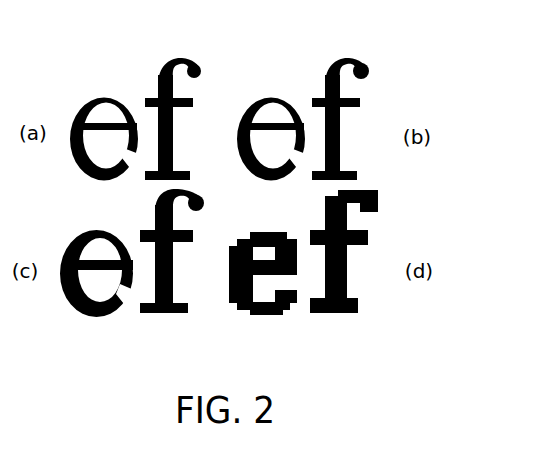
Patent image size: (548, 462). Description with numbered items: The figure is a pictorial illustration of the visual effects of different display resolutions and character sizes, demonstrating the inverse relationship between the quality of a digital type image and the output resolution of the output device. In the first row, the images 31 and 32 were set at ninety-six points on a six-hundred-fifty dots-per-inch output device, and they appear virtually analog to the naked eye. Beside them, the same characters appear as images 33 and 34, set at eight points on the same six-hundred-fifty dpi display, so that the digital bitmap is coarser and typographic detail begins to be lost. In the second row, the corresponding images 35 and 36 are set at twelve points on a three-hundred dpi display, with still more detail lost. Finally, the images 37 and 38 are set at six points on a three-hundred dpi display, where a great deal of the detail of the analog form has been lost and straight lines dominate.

The image 31 is at (96, 97).
The image 32 is at (180, 60).
The character image 33 is at (268, 97).
The character image 34 is at (347, 62).
The image 35 is at (97, 315).
The image 36 is at (165, 313).
The image 37 is at (267, 315).
The image 38 is at (333, 315).